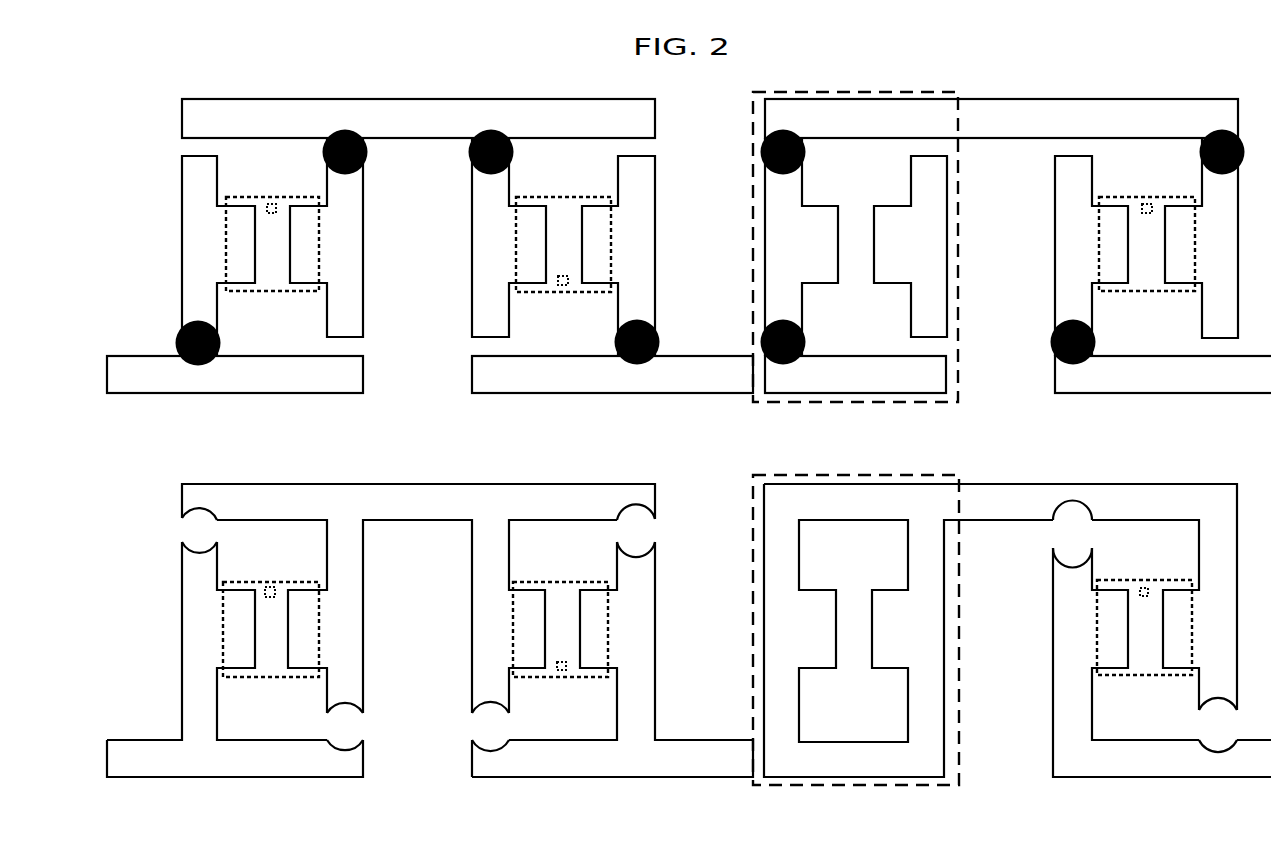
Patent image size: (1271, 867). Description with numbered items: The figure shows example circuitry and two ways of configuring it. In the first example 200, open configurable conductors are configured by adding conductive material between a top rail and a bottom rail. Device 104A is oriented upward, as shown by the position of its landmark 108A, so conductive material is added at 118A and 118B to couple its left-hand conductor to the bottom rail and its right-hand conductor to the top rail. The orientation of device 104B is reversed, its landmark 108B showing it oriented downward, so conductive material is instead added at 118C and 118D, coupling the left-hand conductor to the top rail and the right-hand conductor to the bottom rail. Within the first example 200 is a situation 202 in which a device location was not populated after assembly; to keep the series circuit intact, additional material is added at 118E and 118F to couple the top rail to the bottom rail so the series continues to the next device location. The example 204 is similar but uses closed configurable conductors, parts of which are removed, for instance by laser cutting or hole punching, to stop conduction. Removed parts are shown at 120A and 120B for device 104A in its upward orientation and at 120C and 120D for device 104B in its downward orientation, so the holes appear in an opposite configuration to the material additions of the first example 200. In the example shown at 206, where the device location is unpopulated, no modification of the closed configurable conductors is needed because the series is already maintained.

The first example 200 is at (105, 81).
The situation 202 is at (958, 206).
The example 204 is at (105, 465).
The example 206 is at (959, 589).
The device 104A is at (225, 233).
The device 104B is at (516, 223).
The landmark 108A is at (278, 207).
The landmark 108B is at (569, 280).
The conductive material 118A is at (178, 342).
The conductive material 118B is at (367, 144).
The conductive material 118C is at (512, 144).
The conductive material 118D is at (658, 338).
The additional material 118E is at (805, 144).
The additional material 118F is at (805, 338).
The removed part of closed configurable conductor 120A is at (181, 529).
The removed part of closed configurable conductor 120B is at (363, 727).
The removed part of closed configurable conductor 120C is at (512, 727).
The removed part of closed configurable conductor 120D is at (656, 528).